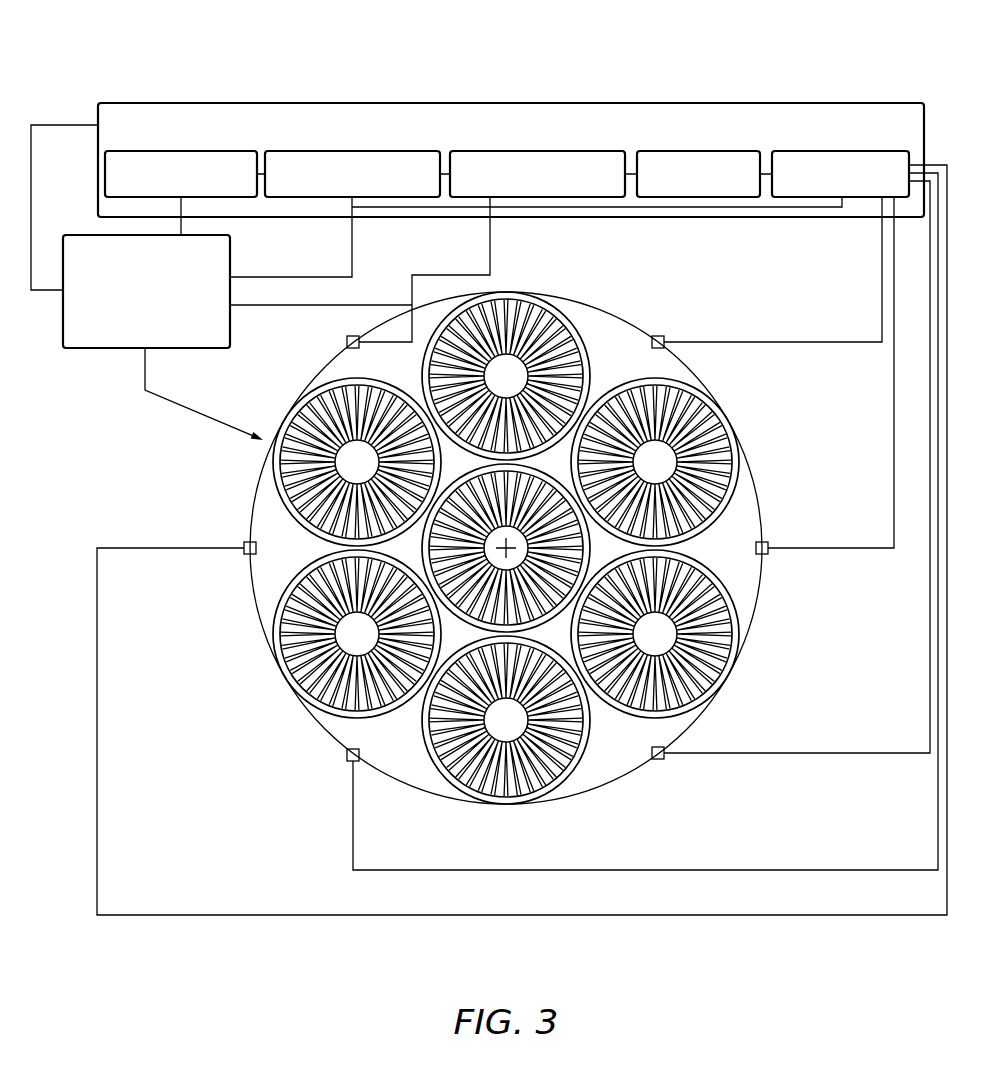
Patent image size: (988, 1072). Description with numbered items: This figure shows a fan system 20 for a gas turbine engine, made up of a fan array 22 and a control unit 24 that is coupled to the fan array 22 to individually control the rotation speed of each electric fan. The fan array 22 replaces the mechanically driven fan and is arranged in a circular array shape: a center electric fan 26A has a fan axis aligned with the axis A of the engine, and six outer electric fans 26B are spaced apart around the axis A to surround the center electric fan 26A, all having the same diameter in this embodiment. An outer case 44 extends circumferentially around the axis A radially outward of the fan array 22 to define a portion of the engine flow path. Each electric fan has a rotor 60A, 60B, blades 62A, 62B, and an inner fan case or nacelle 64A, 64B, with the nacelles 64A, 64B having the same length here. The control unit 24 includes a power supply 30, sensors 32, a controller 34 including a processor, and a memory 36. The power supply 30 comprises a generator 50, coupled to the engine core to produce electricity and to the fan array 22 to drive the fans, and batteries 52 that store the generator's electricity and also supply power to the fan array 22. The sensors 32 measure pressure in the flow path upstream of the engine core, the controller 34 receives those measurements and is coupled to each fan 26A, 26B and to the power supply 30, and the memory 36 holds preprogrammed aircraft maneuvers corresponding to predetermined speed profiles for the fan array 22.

The fan system 20 is at (135, 86).
The fan array 22 is at (98, 348).
The control unit 24 is at (203, 103).
The center electric fan 26A is at (408, 573).
The outer electric fans 26B is at (259, 456).
The power supply 30 is at (332, 71).
The sensors 32 is at (842, 151).
The controller 34 is at (603, 151).
The memory 36 is at (693, 151).
The outer case 44 is at (325, 349).
The generator 50 is at (388, 151).
The batteries 52 is at (192, 151).
The rotor 60A is at (545, 530).
The blades 62A is at (602, 545).
The nacelle 64A is at (568, 476).
The rotor 60B is at (352, 660).
The blades 62B is at (333, 714).
The nacelle 64B is at (300, 641).
The axis A is at (486, 539).